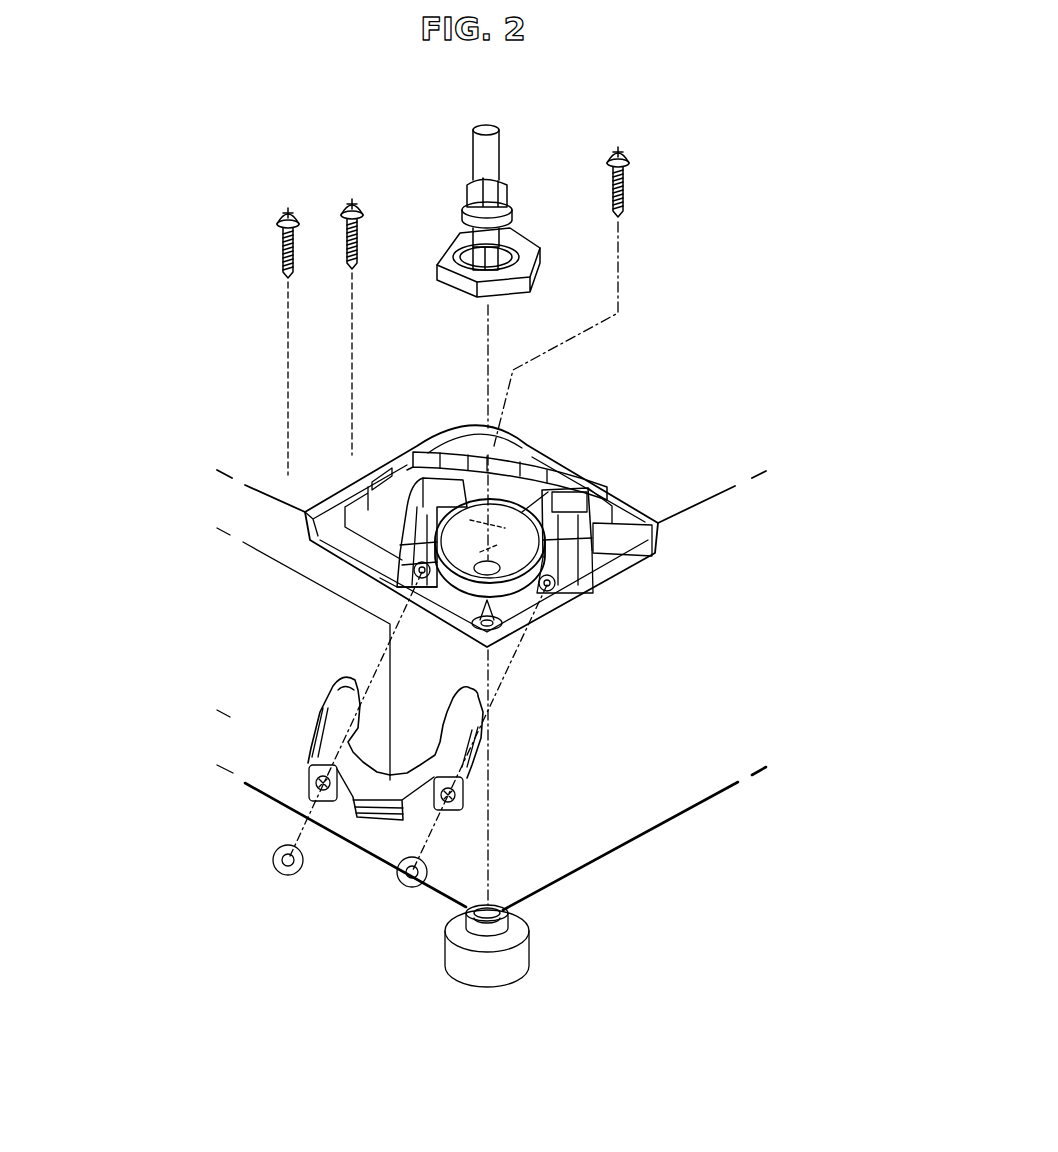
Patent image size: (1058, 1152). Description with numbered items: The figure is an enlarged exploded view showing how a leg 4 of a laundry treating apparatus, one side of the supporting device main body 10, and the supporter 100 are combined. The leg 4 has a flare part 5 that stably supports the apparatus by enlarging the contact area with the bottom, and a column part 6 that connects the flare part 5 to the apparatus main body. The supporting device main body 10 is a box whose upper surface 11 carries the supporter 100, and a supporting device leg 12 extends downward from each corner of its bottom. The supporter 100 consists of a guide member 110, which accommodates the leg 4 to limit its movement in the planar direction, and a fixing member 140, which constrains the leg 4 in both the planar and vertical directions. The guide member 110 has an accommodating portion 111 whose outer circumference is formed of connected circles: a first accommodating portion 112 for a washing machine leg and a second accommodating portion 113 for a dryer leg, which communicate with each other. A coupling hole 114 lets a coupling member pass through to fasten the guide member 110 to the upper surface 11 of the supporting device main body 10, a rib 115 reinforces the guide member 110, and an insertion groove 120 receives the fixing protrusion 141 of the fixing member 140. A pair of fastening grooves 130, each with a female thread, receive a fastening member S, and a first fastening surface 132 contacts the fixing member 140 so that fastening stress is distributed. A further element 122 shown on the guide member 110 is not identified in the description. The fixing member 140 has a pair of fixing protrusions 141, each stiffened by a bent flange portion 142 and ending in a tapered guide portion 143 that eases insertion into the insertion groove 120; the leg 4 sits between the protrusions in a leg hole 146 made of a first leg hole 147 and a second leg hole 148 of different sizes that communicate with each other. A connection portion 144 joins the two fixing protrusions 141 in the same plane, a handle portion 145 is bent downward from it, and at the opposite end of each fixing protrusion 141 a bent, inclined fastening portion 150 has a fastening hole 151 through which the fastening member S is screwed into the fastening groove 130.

The leg 4 is at (564, 188).
The flare part 5 is at (528, 258).
The column part 6 is at (513, 227).
The supporting device main body 10 is at (262, 488).
The upper surface 11 is at (703, 499).
The supporting device leg 12 is at (519, 953).
The supporter 100 is at (224, 592).
The guide member 110 is at (330, 569).
The accommodating portion 111 is at (602, 502).
The first accommodating portion 112 is at (603, 488).
The second accommodating portion 113 is at (558, 487).
The coupling hole 114 is at (526, 630).
The rib 115 is at (601, 553).
The insertion groove 120 is at (444, 452).
The left support 122 is at (448, 488).
The fastening groove 130 is at (524, 606).
The first fastening surface 132 is at (594, 592).
The fixing member 140 is at (326, 683).
The fixing protrusion 141 is at (320, 730).
The flange portion 142 is at (308, 750).
The guide portion 143 is at (342, 679).
The connection portion 144 is at (383, 797).
The handle portion 145 is at (390, 815).
The leg hole 146 is at (502, 732).
The first leg hole 147 is at (398, 762).
The second leg hole 148 is at (420, 716).
The fastening portion 150 is at (312, 782).
The fastening hole 151 is at (314, 790).
The fastening member S is at (288, 877).